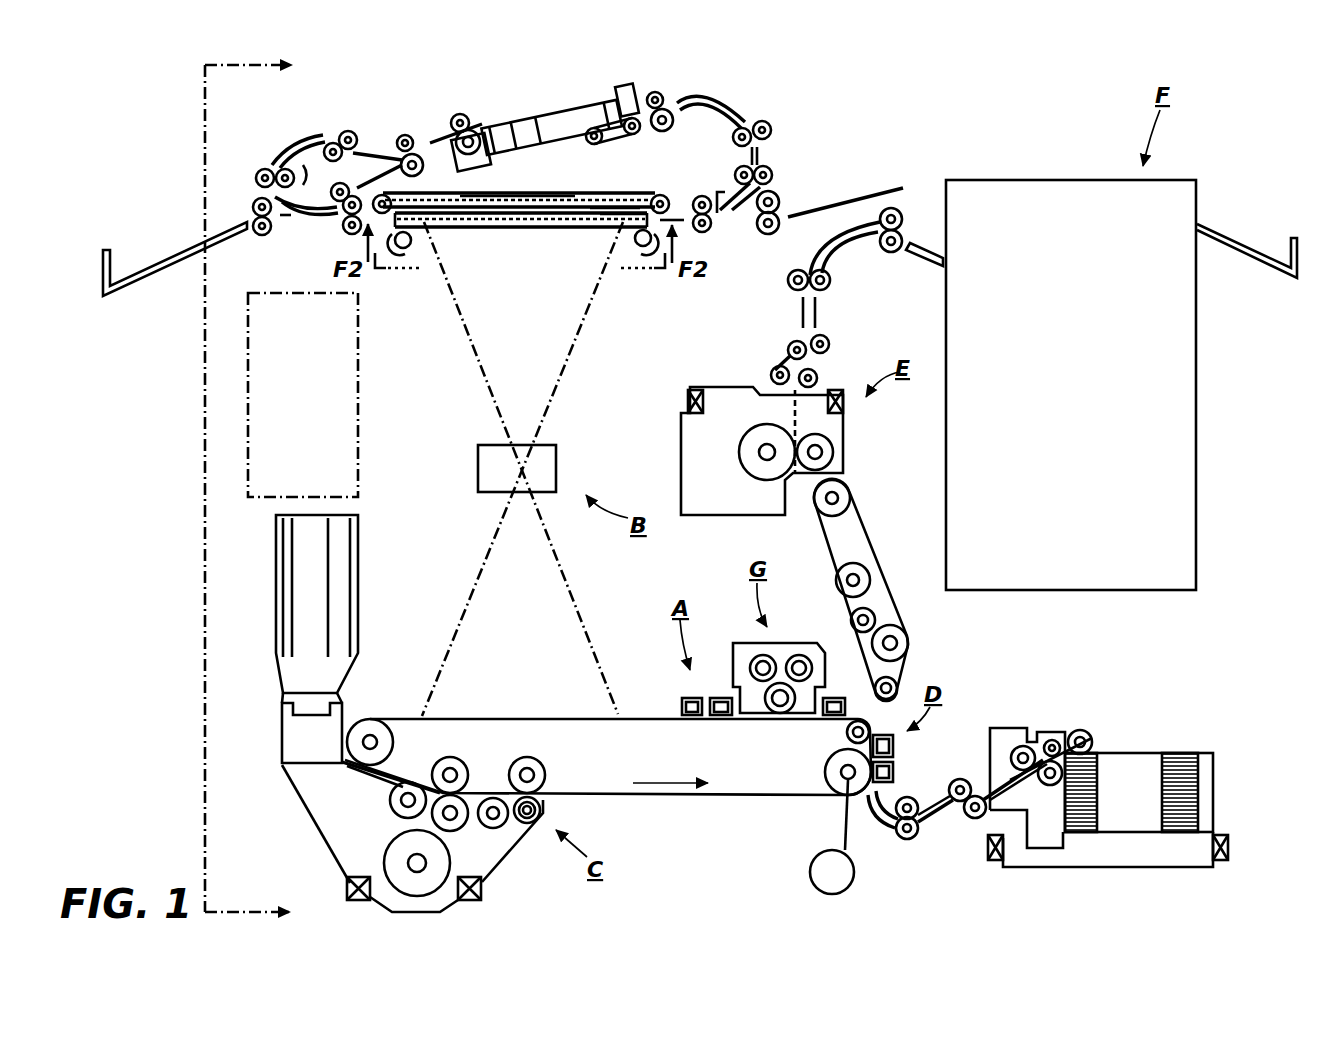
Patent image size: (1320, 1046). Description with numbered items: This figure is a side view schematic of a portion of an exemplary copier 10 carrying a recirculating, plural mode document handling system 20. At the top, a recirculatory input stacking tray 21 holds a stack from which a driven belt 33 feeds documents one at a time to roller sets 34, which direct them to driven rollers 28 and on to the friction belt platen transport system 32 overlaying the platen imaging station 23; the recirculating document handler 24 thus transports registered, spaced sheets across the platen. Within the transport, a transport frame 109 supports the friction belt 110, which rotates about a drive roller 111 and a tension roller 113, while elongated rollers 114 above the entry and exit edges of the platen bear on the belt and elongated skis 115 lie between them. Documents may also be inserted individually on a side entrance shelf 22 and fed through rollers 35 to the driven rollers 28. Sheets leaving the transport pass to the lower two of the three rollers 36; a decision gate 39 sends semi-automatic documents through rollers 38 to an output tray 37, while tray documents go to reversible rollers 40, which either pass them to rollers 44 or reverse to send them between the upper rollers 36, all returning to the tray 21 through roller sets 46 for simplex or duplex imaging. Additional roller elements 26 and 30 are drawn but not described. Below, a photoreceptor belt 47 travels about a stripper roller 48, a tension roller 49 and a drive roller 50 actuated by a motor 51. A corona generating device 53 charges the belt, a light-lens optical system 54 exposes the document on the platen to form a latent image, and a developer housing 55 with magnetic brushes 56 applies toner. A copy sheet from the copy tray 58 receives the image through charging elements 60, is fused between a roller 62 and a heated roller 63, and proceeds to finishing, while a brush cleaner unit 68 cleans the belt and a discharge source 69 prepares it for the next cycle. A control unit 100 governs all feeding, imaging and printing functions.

The copier 10 is at (148, 450).
The document handling system 20 is at (740, 92).
The recirculatory input stacking tray 21 is at (499, 109).
The side entrance shelf 22 is at (867, 190).
The platen imaging station 23 is at (488, 228).
The recirculating document handler 24 is at (613, 93).
The feed rollers 26 is at (769, 235).
The driven rollers 28 is at (705, 233).
The roller 30 is at (403, 250).
The friction belt platen transport system 32 is at (472, 184).
The driven belt 33 is at (655, 91).
The roller sets 34 is at (672, 97).
The rollers 35 is at (794, 201).
The three rollers 36 is at (341, 213).
The output tray 37 is at (157, 262).
The rollers 38 is at (258, 232).
The decision gate 39 is at (286, 218).
The rollers 40 is at (263, 172).
The rollers 44 is at (348, 131).
The roller sets 46 is at (407, 135).
The photoreceptor belt 47 is at (612, 795).
The stripper roller 48 is at (848, 737).
The tension roller 49 is at (375, 707).
The drive roller 50 is at (842, 789).
The motor 51 is at (811, 873).
The corona generating device 53 is at (683, 703).
The light-lens optical input/output system 54 is at (556, 479).
The housing 55 is at (333, 830).
The magnetic brushes 56 is at (400, 798).
The copy tray 58 is at (1118, 752).
The charging elements 60 is at (909, 758).
The roller 62 is at (760, 463).
The heated roller 63 is at (820, 450).
The brush cleaner unit 68 is at (800, 634).
The discharge source 69 is at (718, 698).
The control unit 100 is at (350, 432).
The transport frame 109 is at (532, 207).
The friction belt 110 is at (663, 193).
The drive roller 111 is at (394, 197).
The tension roller 113 is at (667, 198).
The elongated rollers 114 is at (628, 226).
The elongated sliders or skis 115 is at (606, 200).